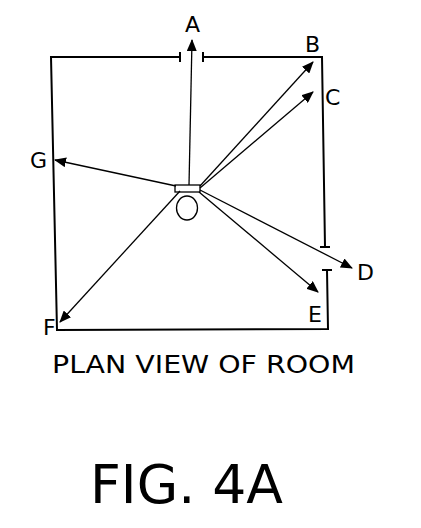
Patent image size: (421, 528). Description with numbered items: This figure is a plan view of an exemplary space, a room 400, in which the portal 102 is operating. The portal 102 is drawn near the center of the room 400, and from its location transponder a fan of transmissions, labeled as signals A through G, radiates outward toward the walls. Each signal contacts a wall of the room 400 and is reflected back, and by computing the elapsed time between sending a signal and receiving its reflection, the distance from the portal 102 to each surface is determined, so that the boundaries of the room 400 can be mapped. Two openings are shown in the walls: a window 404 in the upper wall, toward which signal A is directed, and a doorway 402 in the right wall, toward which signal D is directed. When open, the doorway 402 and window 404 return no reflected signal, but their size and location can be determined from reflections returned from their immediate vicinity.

The portal 102 is at (175, 173).
The room 400 is at (215, 310).
The doorway 402 is at (349, 250).
The window 404 is at (165, 43).